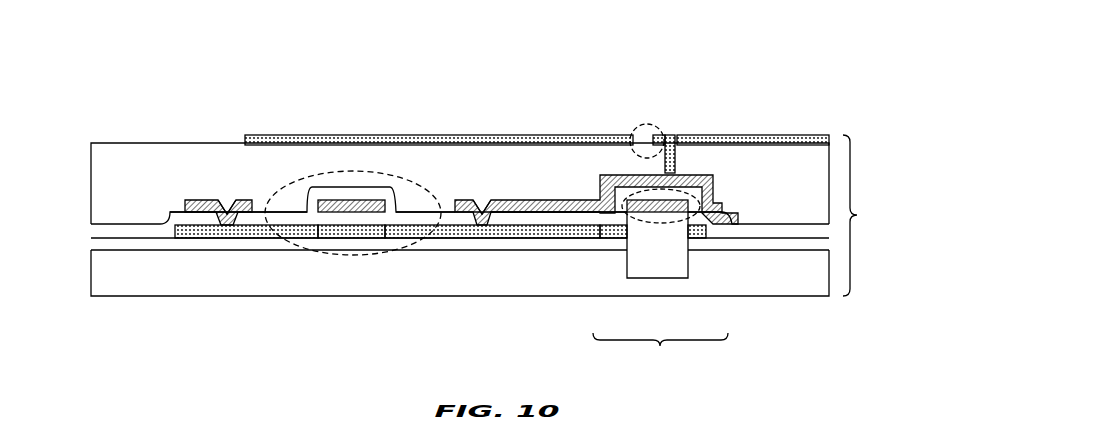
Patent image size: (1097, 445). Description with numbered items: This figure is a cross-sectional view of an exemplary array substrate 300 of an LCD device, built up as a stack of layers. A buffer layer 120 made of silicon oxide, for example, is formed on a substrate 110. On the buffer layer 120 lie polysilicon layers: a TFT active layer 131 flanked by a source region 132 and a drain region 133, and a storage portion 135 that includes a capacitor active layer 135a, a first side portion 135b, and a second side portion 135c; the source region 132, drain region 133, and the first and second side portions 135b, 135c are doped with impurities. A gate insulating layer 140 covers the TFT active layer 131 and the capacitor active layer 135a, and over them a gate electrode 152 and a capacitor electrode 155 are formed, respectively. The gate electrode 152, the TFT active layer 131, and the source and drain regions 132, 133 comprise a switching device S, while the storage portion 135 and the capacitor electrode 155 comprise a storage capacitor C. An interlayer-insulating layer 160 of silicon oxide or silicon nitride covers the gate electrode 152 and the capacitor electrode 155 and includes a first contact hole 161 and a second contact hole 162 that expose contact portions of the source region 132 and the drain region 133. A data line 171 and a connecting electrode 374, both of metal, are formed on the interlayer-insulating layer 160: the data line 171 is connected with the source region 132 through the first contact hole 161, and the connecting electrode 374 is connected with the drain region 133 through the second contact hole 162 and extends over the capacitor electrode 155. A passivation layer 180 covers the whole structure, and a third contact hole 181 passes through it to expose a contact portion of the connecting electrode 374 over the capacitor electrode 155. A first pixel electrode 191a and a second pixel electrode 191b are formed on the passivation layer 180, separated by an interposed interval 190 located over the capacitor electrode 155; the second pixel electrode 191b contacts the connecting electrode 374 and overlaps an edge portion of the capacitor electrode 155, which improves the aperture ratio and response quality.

The substrate 110 is at (460, 273).
The buffer layer 120 is at (478, 246).
The TFT active layer 131 is at (342, 229).
The source region 132 is at (271, 229).
The drain region 133 is at (407, 229).
The storage portion 135 is at (660, 350).
The capacitor active layer 135a is at (655, 280).
The first side portion 135b is at (605, 239).
The second side portion 135c is at (705, 239).
The gate insulating layer 140 is at (333, 220).
The gate electrode 152 is at (380, 196).
The capacitor electrode 155 is at (650, 200).
The interlayer-insulating layer 160 is at (123, 232).
The first contact hole 161 is at (226, 190).
The second contact hole 162 is at (483, 185).
The data line 171 is at (223, 230).
The connecting electrode 374 is at (562, 214).
The passivation layer 180 is at (170, 183).
The third contact hole 181 is at (670, 125).
The interposed interval 190 is at (632, 140).
The first pixel electrode 191a is at (565, 135).
The second pixel electrode 191b is at (790, 135).
The array substrate 300 is at (870, 215).
The switching device S is at (425, 188).
The storage capacitor C is at (607, 138).